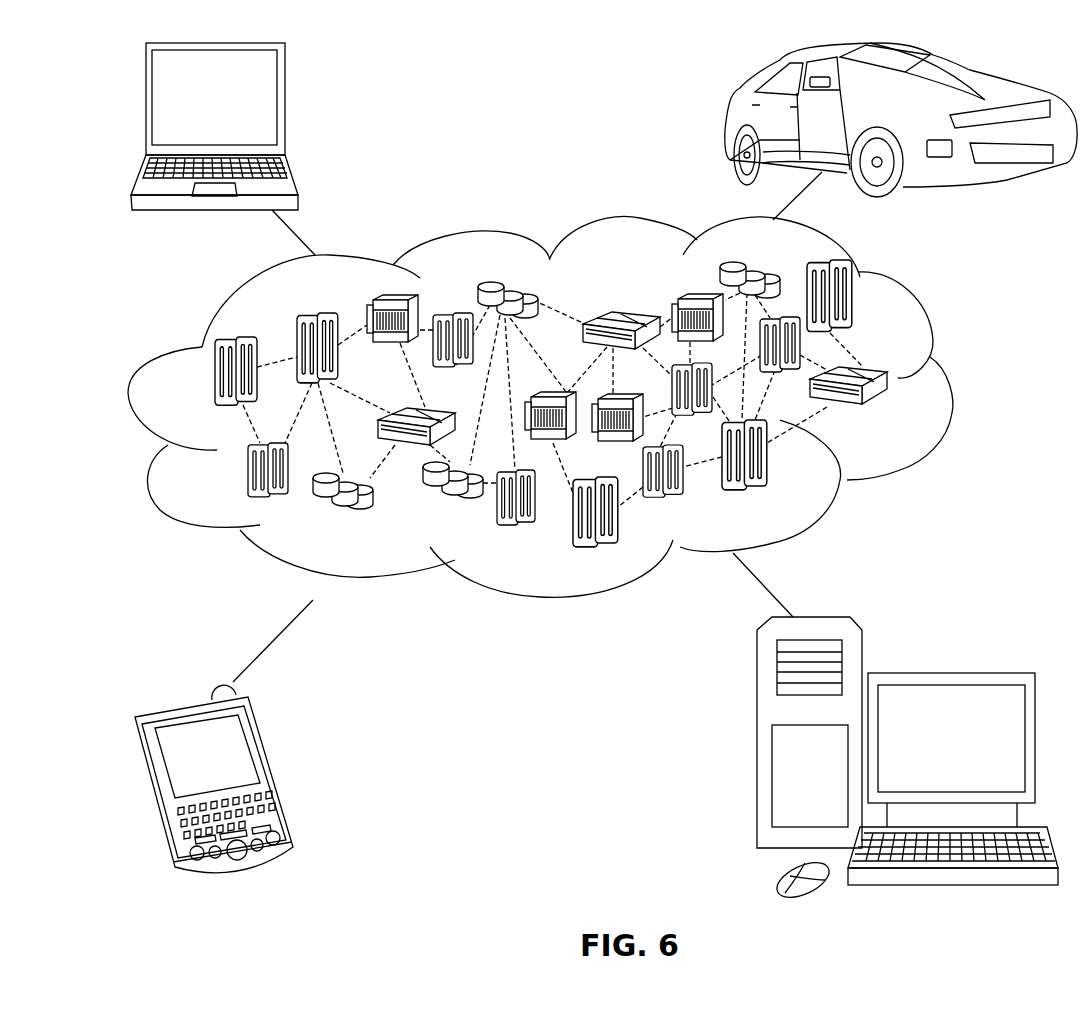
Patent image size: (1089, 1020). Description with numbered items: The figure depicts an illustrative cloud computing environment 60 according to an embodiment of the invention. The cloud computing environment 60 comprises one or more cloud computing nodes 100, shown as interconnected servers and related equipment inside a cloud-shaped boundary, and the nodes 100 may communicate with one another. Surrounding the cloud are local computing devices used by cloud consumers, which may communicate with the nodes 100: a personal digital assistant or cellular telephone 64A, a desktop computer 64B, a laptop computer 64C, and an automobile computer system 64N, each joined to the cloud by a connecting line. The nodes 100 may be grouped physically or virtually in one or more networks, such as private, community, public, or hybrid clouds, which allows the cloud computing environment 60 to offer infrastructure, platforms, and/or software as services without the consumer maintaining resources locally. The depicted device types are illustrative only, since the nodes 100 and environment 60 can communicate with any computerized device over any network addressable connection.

The cloud computing environment 60 is at (950, 382).
The cloud computing nodes 100 is at (897, 412).
The personal digital assistant (PDA) or cellular telephone 64A is at (272, 772).
The desktop computer 64B is at (948, 673).
The laptop computer 64C is at (285, 106).
The automobile computer system 64N is at (727, 123).